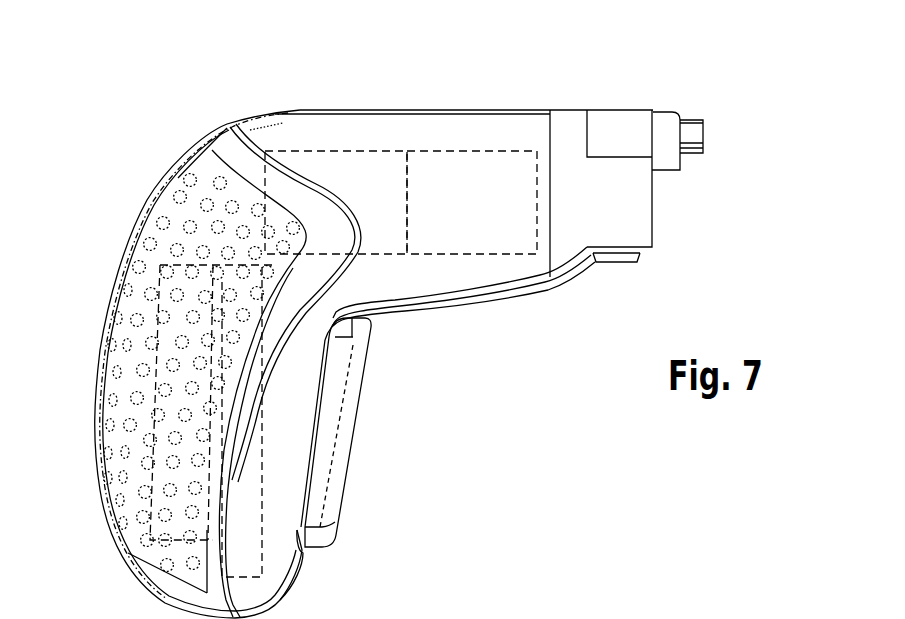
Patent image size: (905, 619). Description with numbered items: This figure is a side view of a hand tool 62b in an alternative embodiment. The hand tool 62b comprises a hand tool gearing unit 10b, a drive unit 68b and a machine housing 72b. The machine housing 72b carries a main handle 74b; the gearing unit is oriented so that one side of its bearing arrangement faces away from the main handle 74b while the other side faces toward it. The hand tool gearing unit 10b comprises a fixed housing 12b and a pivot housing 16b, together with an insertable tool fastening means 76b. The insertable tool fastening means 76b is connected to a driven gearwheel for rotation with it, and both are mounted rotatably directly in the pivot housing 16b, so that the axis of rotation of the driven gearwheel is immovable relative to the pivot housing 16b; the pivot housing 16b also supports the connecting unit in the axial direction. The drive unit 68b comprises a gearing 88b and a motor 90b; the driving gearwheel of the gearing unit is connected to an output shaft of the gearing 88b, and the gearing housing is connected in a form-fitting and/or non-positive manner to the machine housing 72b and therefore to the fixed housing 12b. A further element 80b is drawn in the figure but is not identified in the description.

The hand tool gearing unit 10b is at (668, 85).
The fixed housing 12b is at (570, 110).
The pivot housing 16b is at (660, 125).
The hand tool 62b is at (170, 121).
The drive unit 68b is at (331, 117).
The machine housing 72b is at (412, 127).
The main handle 74b is at (92, 518).
The insertable tool fastening means 76b is at (693, 143).
The switch actuator 80b is at (403, 468).
The gearing 88b is at (505, 167).
The motor 90b is at (320, 160).